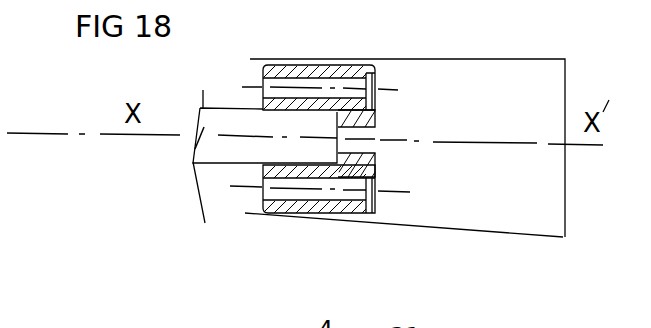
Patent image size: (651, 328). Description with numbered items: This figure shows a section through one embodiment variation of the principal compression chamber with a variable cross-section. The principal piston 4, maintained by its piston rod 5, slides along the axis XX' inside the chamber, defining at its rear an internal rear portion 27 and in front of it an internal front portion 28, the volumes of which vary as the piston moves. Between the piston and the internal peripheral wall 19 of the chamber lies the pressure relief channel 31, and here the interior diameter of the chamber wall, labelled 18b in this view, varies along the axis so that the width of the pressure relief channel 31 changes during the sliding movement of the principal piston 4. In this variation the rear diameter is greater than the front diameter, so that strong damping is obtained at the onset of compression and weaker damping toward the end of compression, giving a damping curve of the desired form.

The principal piston 4 is at (312, 72).
The piston rod 5 is at (242, 142).
The internal peripheral wall 19 is at (532, 57).
The housing wall 18b is at (510, 231).
The internal rear portion 27 is at (462, 188).
The internal front portion 28 is at (207, 80).
The pressure relief channel 31 is at (358, 65).